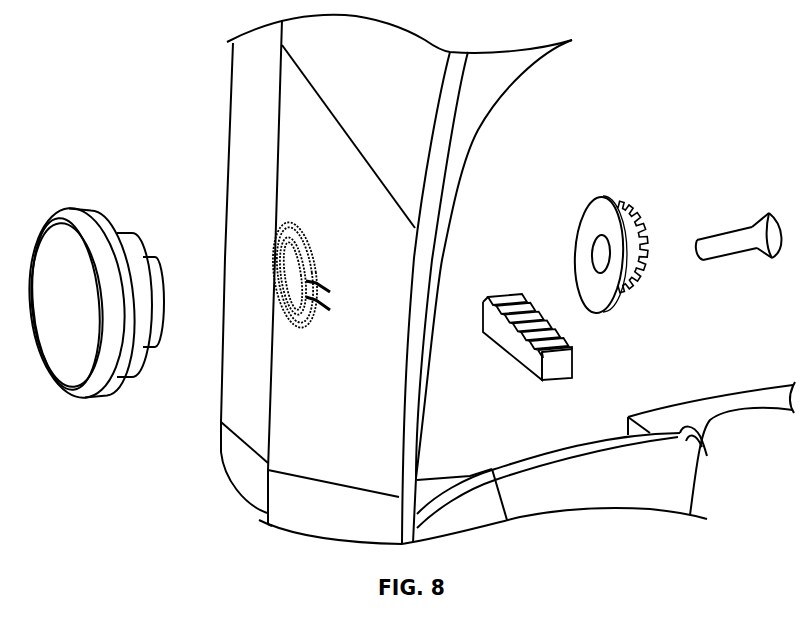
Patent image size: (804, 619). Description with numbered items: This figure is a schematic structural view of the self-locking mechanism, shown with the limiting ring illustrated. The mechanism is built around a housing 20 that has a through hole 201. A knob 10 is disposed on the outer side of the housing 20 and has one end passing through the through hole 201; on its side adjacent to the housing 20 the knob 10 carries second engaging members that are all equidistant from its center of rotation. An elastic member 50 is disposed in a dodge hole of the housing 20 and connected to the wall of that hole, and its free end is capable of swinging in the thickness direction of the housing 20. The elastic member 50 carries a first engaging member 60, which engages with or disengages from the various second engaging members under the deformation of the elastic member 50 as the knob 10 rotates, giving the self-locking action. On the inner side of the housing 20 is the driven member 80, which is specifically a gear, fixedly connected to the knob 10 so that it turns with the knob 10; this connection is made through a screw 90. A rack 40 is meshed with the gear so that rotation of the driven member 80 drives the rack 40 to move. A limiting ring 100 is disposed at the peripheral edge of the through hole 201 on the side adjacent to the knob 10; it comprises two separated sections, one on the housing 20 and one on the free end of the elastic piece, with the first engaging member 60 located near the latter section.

The knob 10 is at (63, 345).
The housing 20 is at (325, 200).
The limiting ring 100 is at (287, 233).
The through hole 201 is at (297, 272).
The first engaging member 60 is at (292, 303).
The elastic member 50 is at (298, 313).
The rack 40 is at (512, 340).
The driven member 80 is at (610, 278).
The screw 90 is at (732, 238).